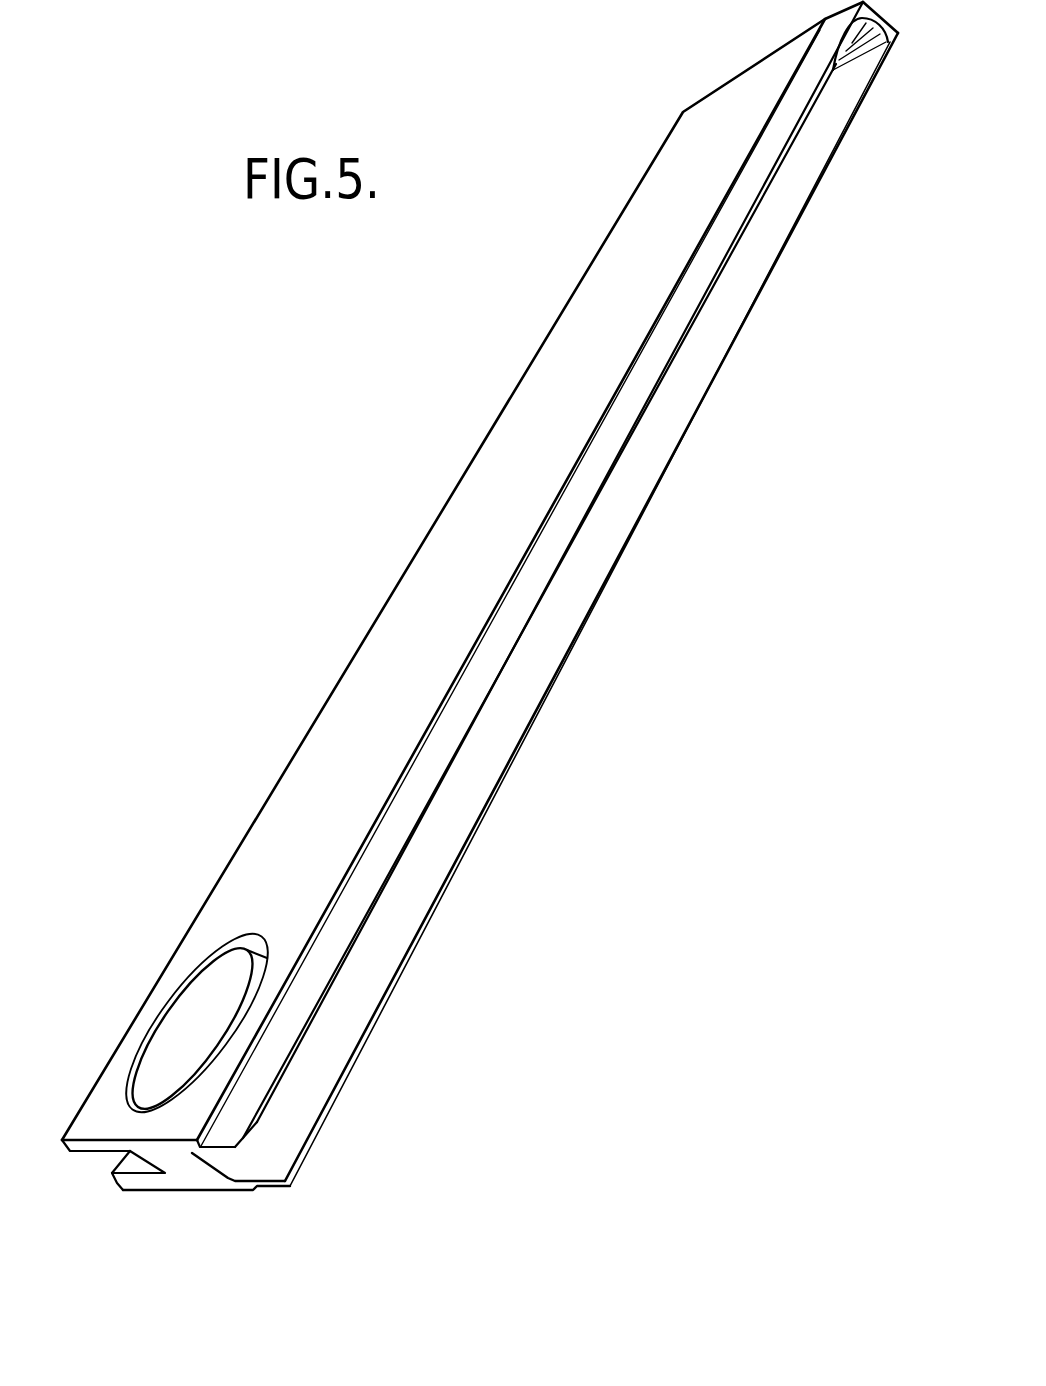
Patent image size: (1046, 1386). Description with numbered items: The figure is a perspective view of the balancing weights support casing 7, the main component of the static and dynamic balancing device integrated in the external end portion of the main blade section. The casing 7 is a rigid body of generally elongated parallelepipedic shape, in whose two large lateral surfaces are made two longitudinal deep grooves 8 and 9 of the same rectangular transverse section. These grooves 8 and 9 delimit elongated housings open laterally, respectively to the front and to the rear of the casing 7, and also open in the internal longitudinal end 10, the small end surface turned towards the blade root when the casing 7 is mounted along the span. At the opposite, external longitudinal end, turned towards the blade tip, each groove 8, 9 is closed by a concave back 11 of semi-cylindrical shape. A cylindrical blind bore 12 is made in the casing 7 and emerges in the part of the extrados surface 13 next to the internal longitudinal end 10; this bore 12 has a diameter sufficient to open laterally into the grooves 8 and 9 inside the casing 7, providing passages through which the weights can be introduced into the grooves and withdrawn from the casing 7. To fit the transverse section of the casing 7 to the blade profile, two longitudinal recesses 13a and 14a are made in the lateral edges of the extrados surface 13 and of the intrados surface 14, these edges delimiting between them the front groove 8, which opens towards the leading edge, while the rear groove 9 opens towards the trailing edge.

The support casing 7 is at (436, 444).
The front groove 8 is at (380, 950).
The rear groove 9 is at (112, 1158).
The internal longitudinal end 10 is at (180, 1172).
The concave back 11 is at (866, 42).
The cylindrical blind bore 12 is at (185, 988).
The extrados surface 13 is at (325, 772).
The longitudinal recess 13a is at (502, 635).
The intrados surface 14 is at (217, 1193).
The longitudinal recess 14a is at (267, 1192).